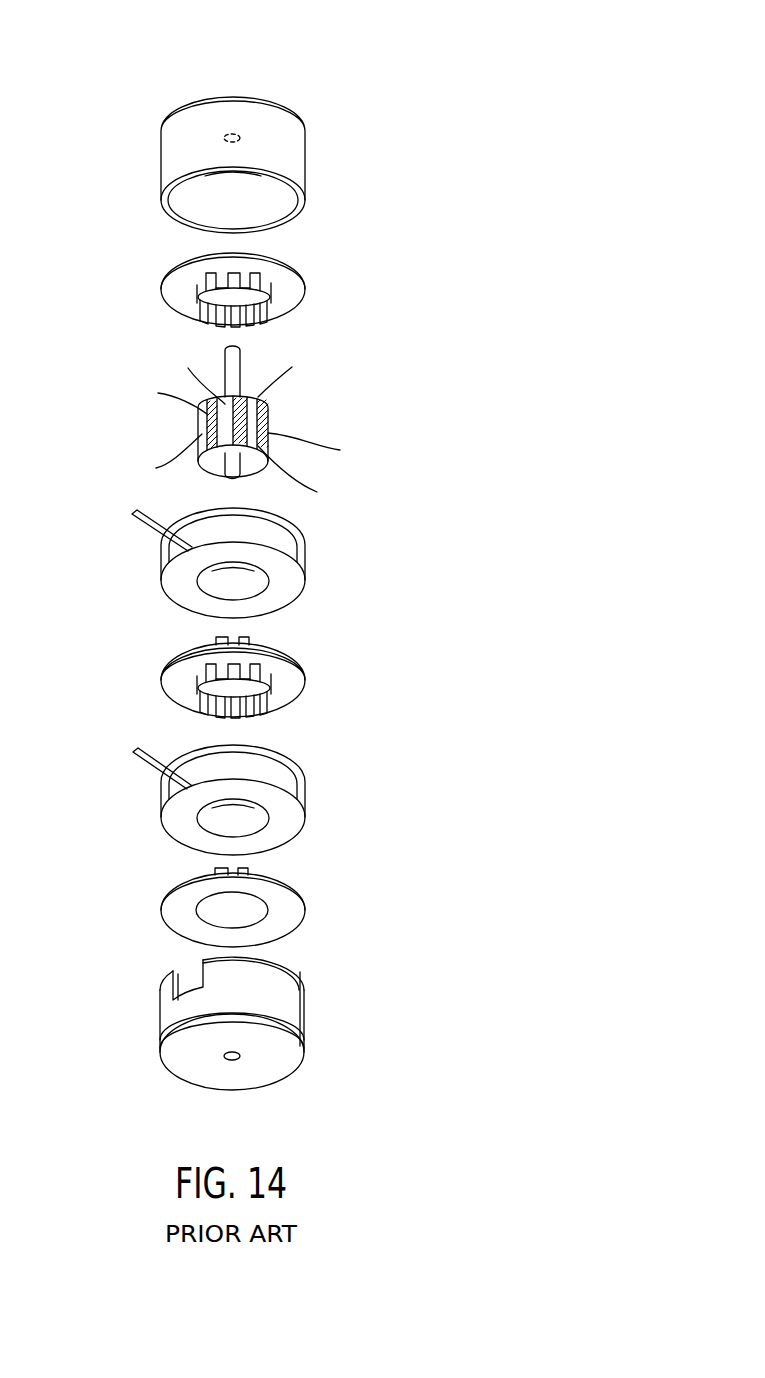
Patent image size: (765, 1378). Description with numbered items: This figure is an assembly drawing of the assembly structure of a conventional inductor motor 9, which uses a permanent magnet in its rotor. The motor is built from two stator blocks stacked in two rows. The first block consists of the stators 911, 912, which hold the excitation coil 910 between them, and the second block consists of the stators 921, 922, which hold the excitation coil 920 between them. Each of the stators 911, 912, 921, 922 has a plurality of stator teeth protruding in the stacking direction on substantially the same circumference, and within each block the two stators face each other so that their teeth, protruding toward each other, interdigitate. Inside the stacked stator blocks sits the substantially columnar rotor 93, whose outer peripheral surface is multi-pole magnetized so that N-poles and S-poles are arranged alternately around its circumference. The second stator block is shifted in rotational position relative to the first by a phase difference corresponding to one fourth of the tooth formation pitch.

The inductor motor 9 is at (289, 81).
The stator 911 is at (267, 302).
The rotor 93 is at (283, 416).
The excitation coil 910 is at (292, 516).
The stator 912 is at (250, 638).
The stator 922 is at (267, 679).
The excitation coil 920 is at (277, 750).
The stator 921 is at (250, 864).